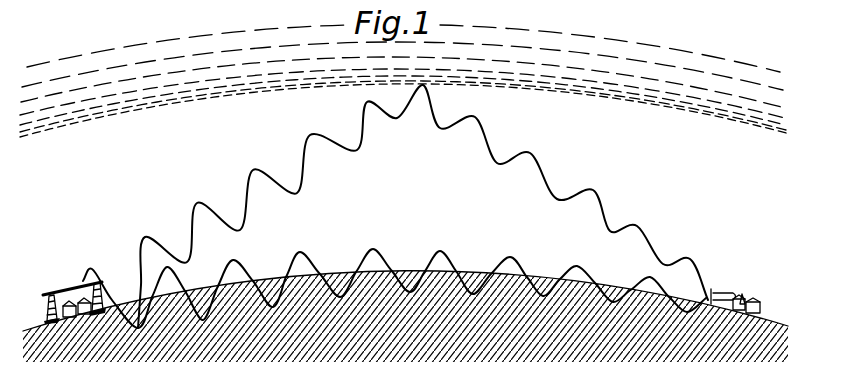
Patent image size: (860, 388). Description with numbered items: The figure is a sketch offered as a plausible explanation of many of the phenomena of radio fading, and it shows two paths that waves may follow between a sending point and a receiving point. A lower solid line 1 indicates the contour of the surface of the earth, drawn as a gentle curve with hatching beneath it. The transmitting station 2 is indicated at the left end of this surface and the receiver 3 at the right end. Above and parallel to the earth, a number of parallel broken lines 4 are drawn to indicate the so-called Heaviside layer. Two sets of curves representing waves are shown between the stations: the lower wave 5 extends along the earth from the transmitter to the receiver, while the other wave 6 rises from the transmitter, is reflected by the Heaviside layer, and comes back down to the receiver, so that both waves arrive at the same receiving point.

The solid line 1 is at (409, 270).
The transmitting station 2 is at (70, 288).
The receiver 3 is at (735, 296).
The parallel broken lines 4 is at (92, 62).
The lower wave 5 is at (316, 257).
The other wave 6 is at (438, 135).